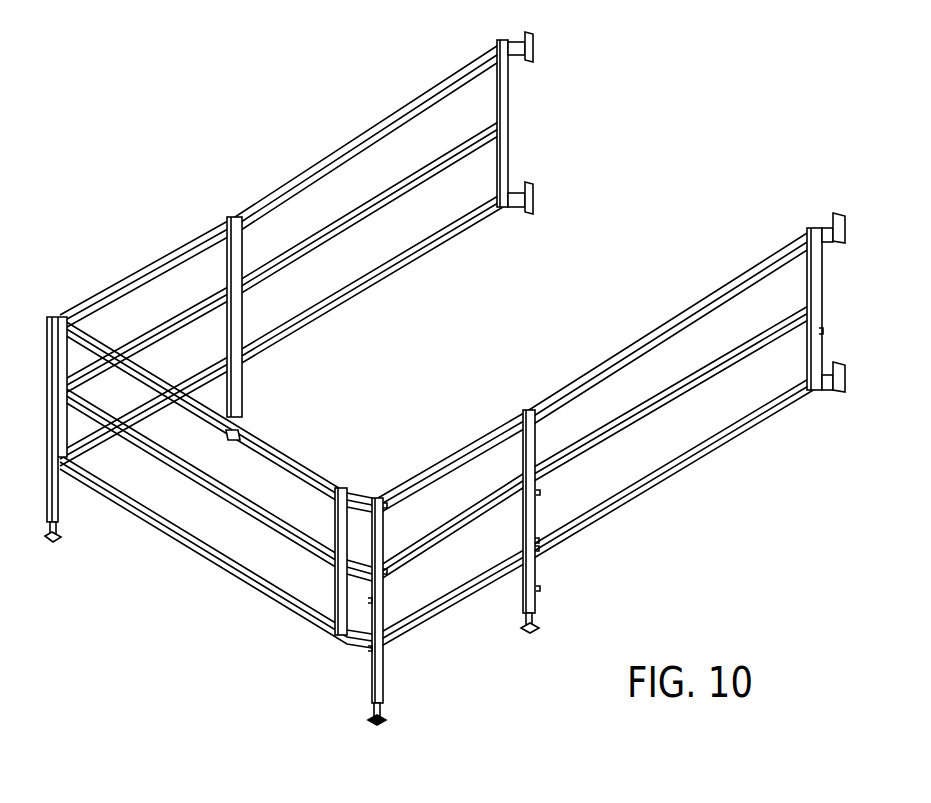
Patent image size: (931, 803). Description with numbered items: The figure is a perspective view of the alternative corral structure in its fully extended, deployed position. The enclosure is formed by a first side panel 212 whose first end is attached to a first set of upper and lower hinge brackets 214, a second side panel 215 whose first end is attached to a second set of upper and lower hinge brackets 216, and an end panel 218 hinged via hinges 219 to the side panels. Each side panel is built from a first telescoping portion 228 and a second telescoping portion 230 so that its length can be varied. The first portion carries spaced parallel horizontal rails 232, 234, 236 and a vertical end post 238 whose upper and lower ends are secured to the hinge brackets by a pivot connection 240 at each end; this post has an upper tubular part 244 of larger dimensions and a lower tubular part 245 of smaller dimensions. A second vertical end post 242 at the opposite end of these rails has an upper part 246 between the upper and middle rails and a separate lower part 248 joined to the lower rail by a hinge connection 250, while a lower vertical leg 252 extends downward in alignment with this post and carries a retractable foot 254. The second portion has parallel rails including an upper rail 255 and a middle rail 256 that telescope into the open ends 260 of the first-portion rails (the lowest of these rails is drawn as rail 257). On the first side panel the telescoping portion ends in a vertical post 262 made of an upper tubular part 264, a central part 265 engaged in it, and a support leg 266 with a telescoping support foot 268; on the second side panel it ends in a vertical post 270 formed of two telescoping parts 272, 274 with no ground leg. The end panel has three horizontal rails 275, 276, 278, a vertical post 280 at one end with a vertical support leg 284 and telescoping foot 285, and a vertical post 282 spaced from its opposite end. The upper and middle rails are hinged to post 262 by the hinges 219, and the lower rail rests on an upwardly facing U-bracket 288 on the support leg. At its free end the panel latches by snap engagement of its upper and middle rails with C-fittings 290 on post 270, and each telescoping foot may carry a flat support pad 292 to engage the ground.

The first side panel 212 is at (691, 226).
The first set of upper and lower hinge brackets 214 is at (840, 220).
The second side panel 215 is at (521, 301).
The second set of upper and lower hinge brackets 216 is at (533, 55).
The end panel 218 is at (227, 479).
The hinges 219 is at (384, 506).
The first telescoping portion 228 is at (521, 276).
The second telescoping portion 230 is at (160, 252).
The upper horizontal rail 232 is at (270, 193).
The middle horizontal rail 234 is at (525, 327).
The lower horizontal rail 236 is at (407, 253).
The vertical end post 238 is at (659, 215).
The hinge or pivot connection 240 is at (530, 38).
The second vertical end post 242 is at (545, 513).
The upper tubular part 244 is at (812, 277).
The lower tubular part 245 is at (813, 332).
The upper part 246 is at (430, 415).
The lower part 248 is at (430, 420).
The hinge connection 250 is at (538, 540).
The lower vertical leg 252 is at (240, 380).
The retractable foot 254 is at (540, 632).
The upper horizontal rail of second portion 255 is at (112, 287).
The middle horizontal rail of second portion 256 is at (160, 318).
The bottom rail 257 is at (203, 368).
The open ends of rails 260 is at (394, 428).
The vertical post 262 is at (321, 650).
The upper tubular part 264 is at (402, 570).
The central part 265 is at (384, 572).
The support leg 266 is at (385, 660).
The telescoping support foot 268 is at (388, 720).
The vertical post 270 is at (72, 358).
The telescoping part 272 is at (45, 360).
The telescoping part 274 is at (216, 478).
The upper horizontal rail of end panel 275 is at (228, 433).
The middle horizontal rail of end panel 276 is at (232, 496).
The lower horizontal rail of end panel 278 is at (220, 556).
The vertical post 280 is at (216, 550).
The vertical post 282 is at (335, 516).
The vertical support leg 284 is at (86, 546).
The telescoping foot 285 is at (60, 528).
The U-bracket 288 is at (335, 674).
The C-fittings 290 is at (43, 377).
The flat support pad 292 is at (63, 543).